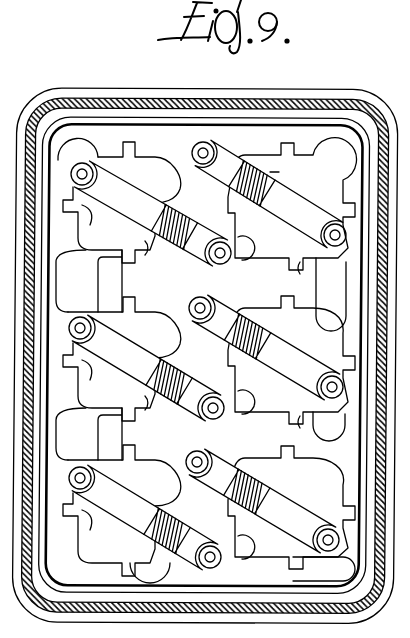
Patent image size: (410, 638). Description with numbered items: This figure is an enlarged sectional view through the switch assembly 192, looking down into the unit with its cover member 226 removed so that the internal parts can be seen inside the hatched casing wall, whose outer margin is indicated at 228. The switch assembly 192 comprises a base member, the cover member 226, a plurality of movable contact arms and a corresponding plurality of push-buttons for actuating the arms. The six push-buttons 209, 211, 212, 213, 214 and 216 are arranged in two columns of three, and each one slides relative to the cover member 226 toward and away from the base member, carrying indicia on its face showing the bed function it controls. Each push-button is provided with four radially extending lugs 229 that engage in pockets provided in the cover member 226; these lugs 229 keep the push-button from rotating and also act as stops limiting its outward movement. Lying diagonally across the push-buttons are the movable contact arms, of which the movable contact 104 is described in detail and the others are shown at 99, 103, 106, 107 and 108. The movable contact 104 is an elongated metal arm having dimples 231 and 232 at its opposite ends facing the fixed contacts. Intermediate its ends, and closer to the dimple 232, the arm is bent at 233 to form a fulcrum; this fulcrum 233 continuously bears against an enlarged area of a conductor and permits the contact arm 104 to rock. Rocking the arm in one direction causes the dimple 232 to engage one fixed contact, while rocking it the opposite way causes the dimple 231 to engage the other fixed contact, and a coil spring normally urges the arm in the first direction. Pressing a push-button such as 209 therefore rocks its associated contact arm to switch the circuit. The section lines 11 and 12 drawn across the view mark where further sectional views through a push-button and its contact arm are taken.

The connecting link 99 is at (285, 503).
The connecting link 103 is at (222, 314).
The movable contact 104 is at (224, 161).
The connecting link 106 is at (122, 500).
The connecting link 107 is at (146, 379).
The connecting link 108 is at (151, 223).
The section line 11- 11 is at (170, 149).
The section line 12- 12 is at (211, 216).
The switch assembly 192 is at (303, 103).
The push-button 209 is at (292, 272).
The push-button 211 is at (165, 256).
The push-button 212 is at (278, 400).
The push-button 213 is at (163, 411).
The push-button 214 is at (297, 550).
The push-button 216 is at (100, 543).
The cover member 226 is at (312, 128).
The outer casing wall 228 is at (370, 624).
The radially extending lugs 229 is at (131, 142).
The dimple 231 is at (324, 213).
The dimple 232 is at (207, 146).
The fulcrum 233 is at (292, 172).